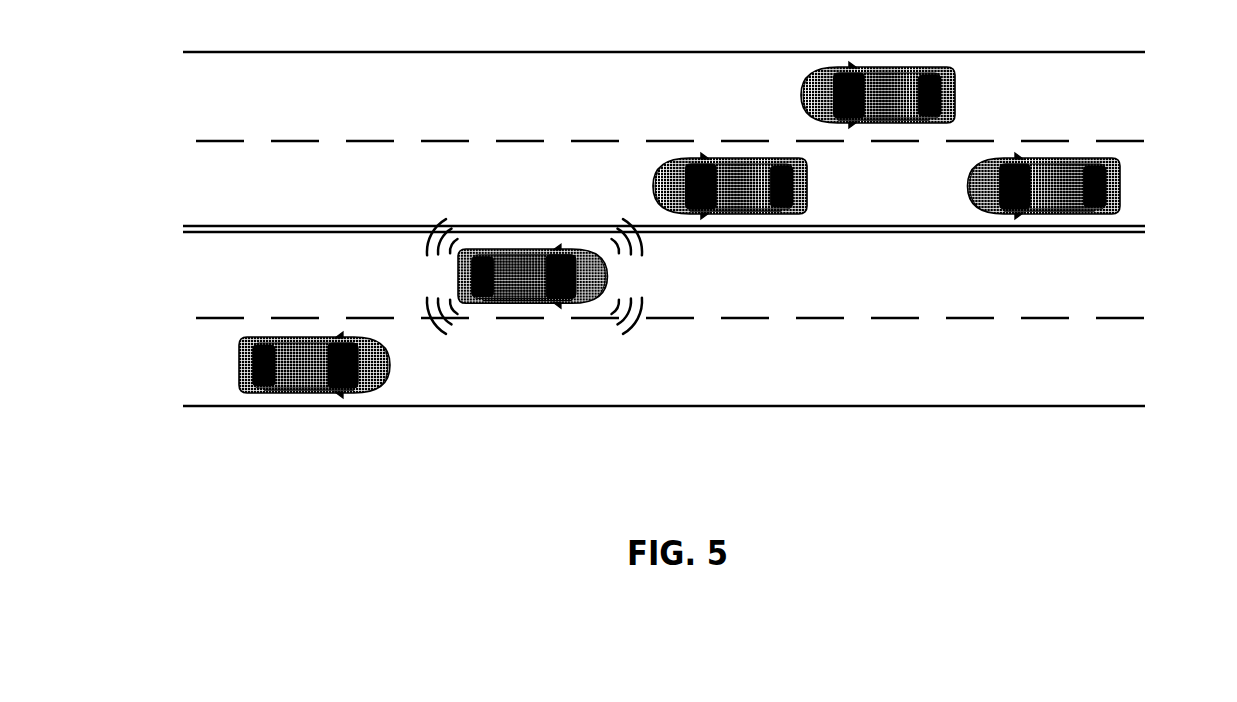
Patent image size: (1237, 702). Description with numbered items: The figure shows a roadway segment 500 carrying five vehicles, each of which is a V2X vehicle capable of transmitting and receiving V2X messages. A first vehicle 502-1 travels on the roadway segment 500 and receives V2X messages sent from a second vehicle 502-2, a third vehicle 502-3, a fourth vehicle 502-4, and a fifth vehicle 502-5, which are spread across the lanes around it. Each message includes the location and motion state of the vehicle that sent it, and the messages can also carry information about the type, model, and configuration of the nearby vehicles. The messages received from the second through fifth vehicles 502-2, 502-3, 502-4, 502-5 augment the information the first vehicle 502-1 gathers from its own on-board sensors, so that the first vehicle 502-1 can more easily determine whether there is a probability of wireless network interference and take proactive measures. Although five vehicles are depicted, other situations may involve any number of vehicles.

The roadway segment 500 is at (366, 440).
The first vehicle 502-1 is at (598, 283).
The second vehicle 502-2 is at (382, 366).
The third vehicle 502-3 is at (801, 183).
The fourth vehicle 502-4 is at (957, 100).
The fifth vehicle 502-5 is at (1121, 183).